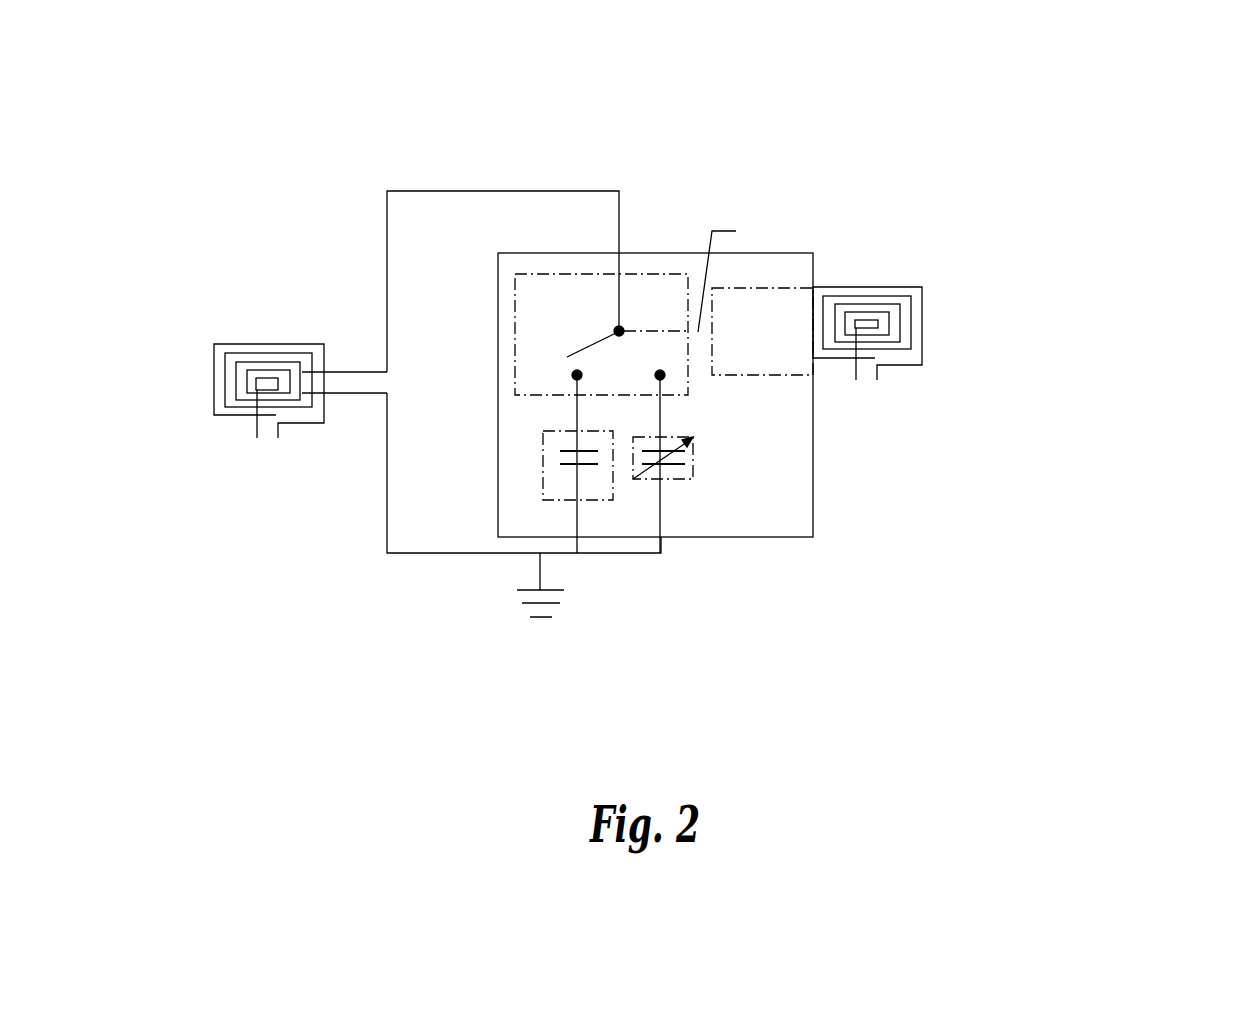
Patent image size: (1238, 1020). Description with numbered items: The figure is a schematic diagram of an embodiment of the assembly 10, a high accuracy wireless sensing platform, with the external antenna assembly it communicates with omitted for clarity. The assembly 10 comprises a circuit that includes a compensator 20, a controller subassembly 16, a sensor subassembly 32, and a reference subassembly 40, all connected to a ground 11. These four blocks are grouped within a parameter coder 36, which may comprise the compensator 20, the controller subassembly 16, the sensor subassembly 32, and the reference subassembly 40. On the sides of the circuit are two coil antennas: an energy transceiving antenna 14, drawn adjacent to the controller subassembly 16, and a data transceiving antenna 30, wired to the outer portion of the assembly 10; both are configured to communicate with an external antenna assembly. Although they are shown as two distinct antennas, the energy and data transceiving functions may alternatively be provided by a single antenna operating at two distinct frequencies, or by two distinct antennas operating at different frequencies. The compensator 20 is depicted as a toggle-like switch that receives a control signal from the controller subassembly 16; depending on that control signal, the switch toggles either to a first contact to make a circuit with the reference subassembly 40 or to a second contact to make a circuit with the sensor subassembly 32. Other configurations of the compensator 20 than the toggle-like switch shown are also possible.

The assembly 10 is at (545, 110).
The ground 11 is at (512, 602).
The energy transceiving antenna 14 is at (936, 291).
The controller subassembly 16 is at (783, 375).
The compensator 20 is at (668, 274).
The data transceiving antenna 30 is at (226, 331).
The sensor subassembly 32 is at (693, 460).
The parameter coder 36 is at (707, 537).
The reference subassembly 40 is at (596, 502).